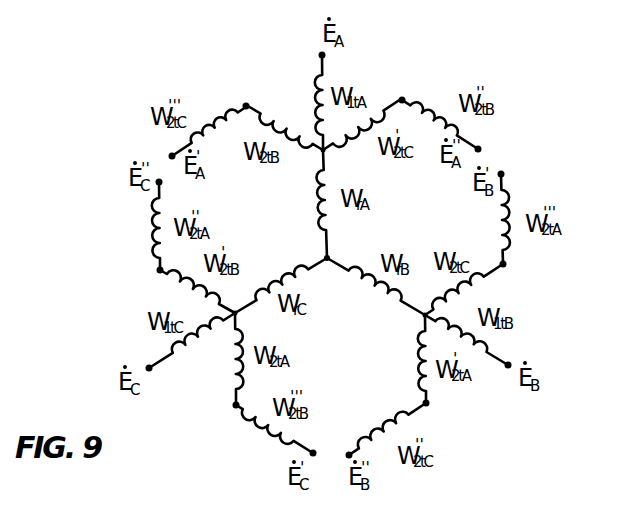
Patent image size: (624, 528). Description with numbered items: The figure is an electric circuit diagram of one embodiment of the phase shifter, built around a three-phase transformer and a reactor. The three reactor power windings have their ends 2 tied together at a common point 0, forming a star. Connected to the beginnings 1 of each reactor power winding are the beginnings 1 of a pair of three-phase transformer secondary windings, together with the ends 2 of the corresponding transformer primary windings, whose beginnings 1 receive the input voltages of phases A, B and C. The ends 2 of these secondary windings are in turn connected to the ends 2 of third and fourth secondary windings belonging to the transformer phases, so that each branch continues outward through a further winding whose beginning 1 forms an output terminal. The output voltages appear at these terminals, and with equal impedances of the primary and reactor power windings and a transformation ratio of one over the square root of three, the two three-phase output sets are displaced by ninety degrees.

The common point 0 is at (328, 275).
The beginning of winding 1 is at (334, 254).
The end of winding 2 is at (341, 258).